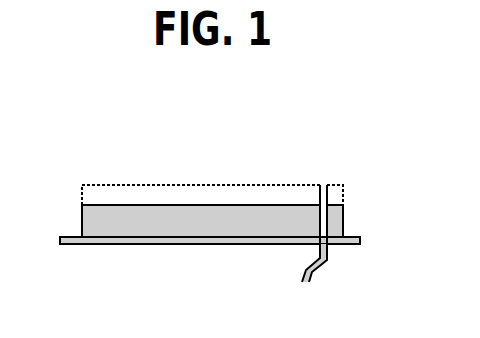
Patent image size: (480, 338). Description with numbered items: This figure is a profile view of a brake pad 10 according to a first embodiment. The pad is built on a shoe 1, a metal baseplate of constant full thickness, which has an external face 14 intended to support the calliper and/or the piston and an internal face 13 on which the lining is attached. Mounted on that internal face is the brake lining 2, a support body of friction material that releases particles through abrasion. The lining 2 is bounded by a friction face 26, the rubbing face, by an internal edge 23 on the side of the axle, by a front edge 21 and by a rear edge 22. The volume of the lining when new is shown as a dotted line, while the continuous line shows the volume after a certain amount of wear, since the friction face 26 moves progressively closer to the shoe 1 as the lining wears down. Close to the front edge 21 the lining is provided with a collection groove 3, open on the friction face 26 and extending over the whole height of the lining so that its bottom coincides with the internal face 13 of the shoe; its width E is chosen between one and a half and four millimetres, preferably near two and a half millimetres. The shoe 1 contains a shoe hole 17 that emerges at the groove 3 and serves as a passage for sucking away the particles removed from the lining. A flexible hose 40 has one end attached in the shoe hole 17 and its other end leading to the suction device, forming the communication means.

The electronic device / assembly 10 is at (98, 147).
The shoe 1 is at (218, 245).
The brake lining 2 is at (203, 178).
The collection groove 3 is at (318, 197).
The width of the collection groove E is at (336, 170).
The internal face 13 is at (182, 238).
The external face 14 is at (139, 245).
The shoe hole 17 is at (325, 240).
The front edge 21 is at (345, 218).
The rear edge 22 is at (82, 218).
The internal edge 23 is at (118, 218).
The friction face 26 is at (165, 205).
The flexible hose 40 is at (318, 273).